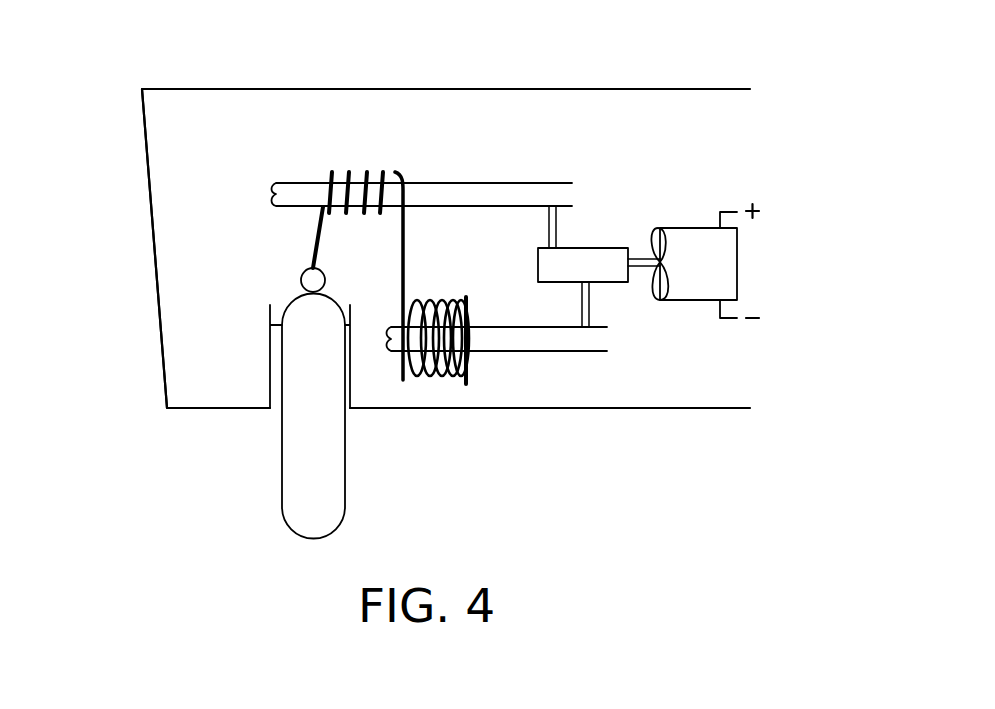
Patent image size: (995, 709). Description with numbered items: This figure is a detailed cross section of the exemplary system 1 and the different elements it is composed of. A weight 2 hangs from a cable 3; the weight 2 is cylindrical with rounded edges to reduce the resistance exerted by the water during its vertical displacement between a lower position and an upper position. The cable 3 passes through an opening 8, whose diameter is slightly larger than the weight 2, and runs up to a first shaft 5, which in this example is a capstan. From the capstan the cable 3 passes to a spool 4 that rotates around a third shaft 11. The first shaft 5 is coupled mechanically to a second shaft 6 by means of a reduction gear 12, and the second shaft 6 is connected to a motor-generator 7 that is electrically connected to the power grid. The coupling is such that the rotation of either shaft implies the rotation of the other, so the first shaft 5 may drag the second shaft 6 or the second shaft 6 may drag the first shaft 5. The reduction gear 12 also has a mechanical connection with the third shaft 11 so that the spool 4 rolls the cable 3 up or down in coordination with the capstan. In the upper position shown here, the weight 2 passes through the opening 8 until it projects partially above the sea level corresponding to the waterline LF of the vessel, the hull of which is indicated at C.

The system 1 is at (110, 83).
The housing / casing C is at (143, 150).
The waterline LF is at (162, 326).
The weight 2 is at (317, 485).
The cable 3 is at (310, 236).
The spool 4 is at (460, 375).
The first shaft 5 is at (456, 197).
The second shaft 6 is at (640, 262).
The motor-generator 7 is at (687, 243).
The opening 8 is at (264, 396).
The third shaft 11 is at (513, 342).
The reduction gear 12 is at (588, 262).